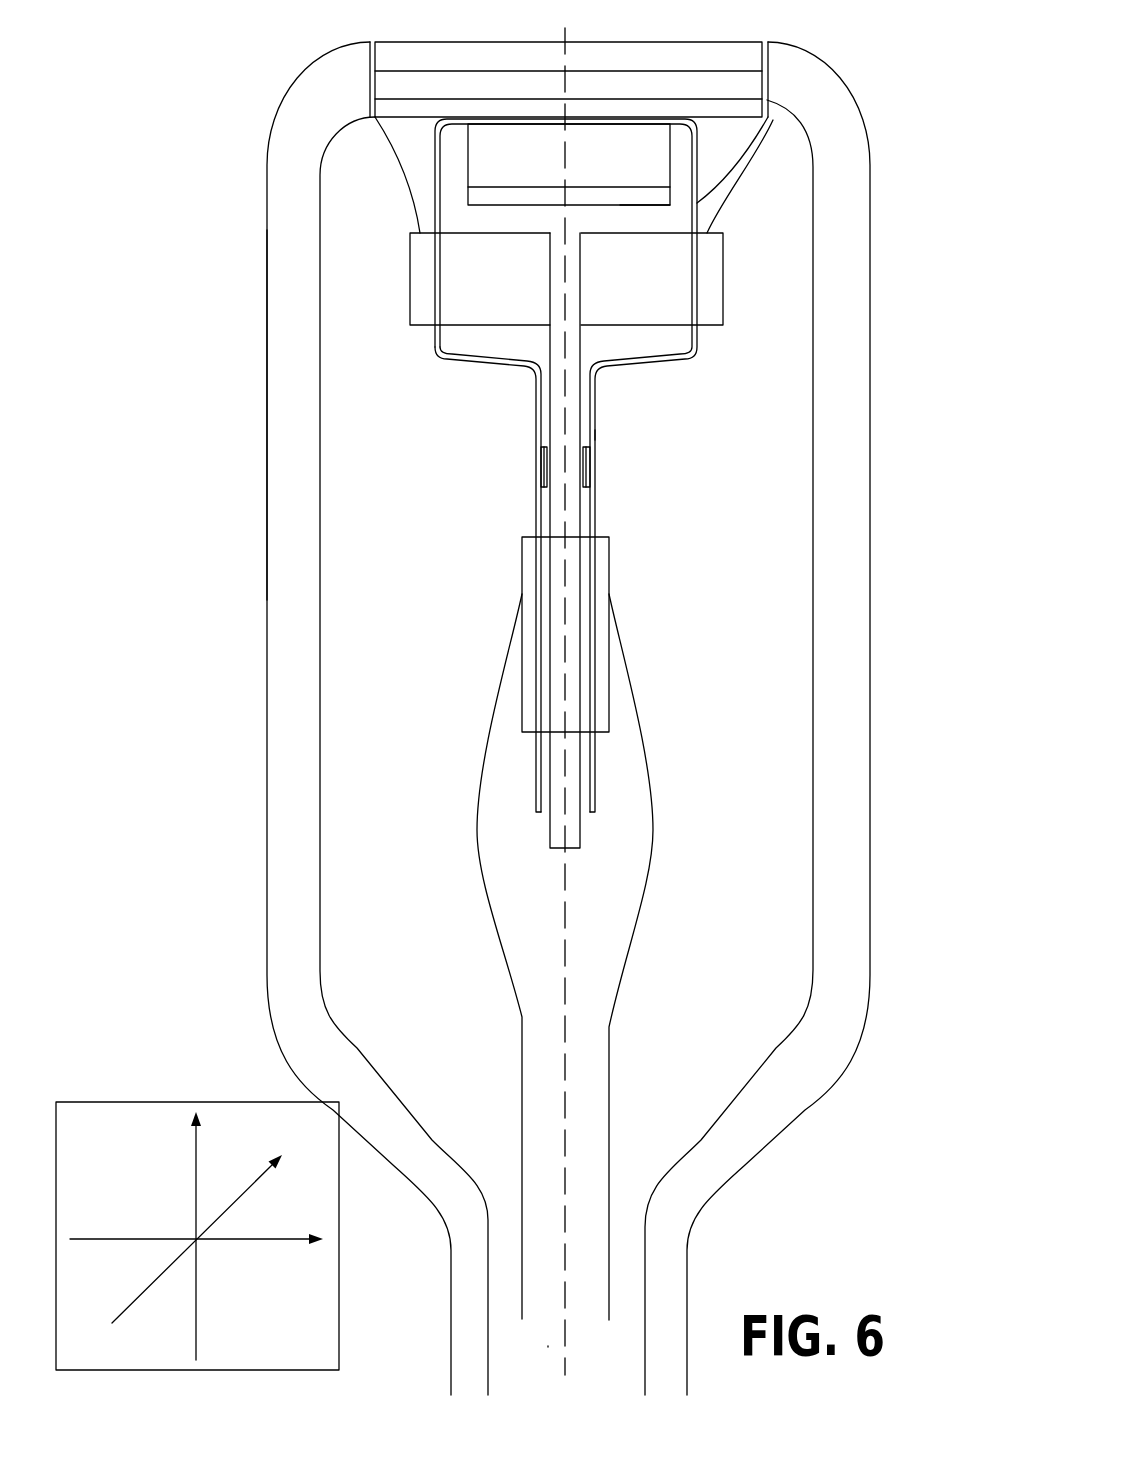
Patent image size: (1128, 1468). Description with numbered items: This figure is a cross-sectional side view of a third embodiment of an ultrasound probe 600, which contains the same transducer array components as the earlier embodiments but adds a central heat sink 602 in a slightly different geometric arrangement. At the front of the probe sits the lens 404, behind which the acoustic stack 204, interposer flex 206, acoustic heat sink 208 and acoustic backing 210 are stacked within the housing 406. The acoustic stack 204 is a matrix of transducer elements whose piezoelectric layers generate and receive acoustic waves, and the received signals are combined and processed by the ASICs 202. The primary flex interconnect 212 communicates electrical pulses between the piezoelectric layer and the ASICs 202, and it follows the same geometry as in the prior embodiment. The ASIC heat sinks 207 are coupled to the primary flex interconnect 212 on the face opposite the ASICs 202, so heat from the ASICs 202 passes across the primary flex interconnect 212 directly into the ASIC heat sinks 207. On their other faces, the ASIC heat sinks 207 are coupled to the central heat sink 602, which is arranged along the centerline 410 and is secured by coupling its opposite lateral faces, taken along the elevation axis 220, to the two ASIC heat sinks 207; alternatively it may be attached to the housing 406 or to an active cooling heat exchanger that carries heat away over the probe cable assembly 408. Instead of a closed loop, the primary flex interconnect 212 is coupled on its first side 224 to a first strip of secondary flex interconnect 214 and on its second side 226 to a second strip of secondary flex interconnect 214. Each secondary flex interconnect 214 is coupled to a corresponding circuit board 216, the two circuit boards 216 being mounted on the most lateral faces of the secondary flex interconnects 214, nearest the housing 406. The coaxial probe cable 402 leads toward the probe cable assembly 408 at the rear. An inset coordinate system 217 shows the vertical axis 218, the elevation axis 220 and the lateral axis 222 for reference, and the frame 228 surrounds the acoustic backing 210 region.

The ultrasound probe 600 is at (305, 45).
The ASIC 202 is at (435, 187).
The acoustic stack 204 is at (792, 49).
The interposer flex 206 is at (768, 100).
The ASIC heat sink 207 is at (510, 291).
The acoustic heat sink 208 is at (638, 207).
The acoustic backing 210 is at (575, 188).
The primary flex interconnect 212 is at (595, 430).
The secondary flex interconnect 214 is at (536, 518).
The circuit board 216 is at (522, 547).
The coordinate system 217 is at (152, 1085).
The vertical axis 218 is at (196, 1150).
The elevation axis 220 is at (272, 1240).
The lateral axis 222 is at (147, 1287).
The first side 224 is at (375, 117).
The second side 226 is at (770, 116).
The frame 228 is at (497, 117).
The coaxial probe cable 402 is at (522, 1281).
The lens 404 is at (763, 42).
The housing 406 is at (267, 293).
The probe cable assembly 408 is at (548, 1346).
The centerline 410 is at (565, 1366).
The central heat sink 602 is at (578, 826).